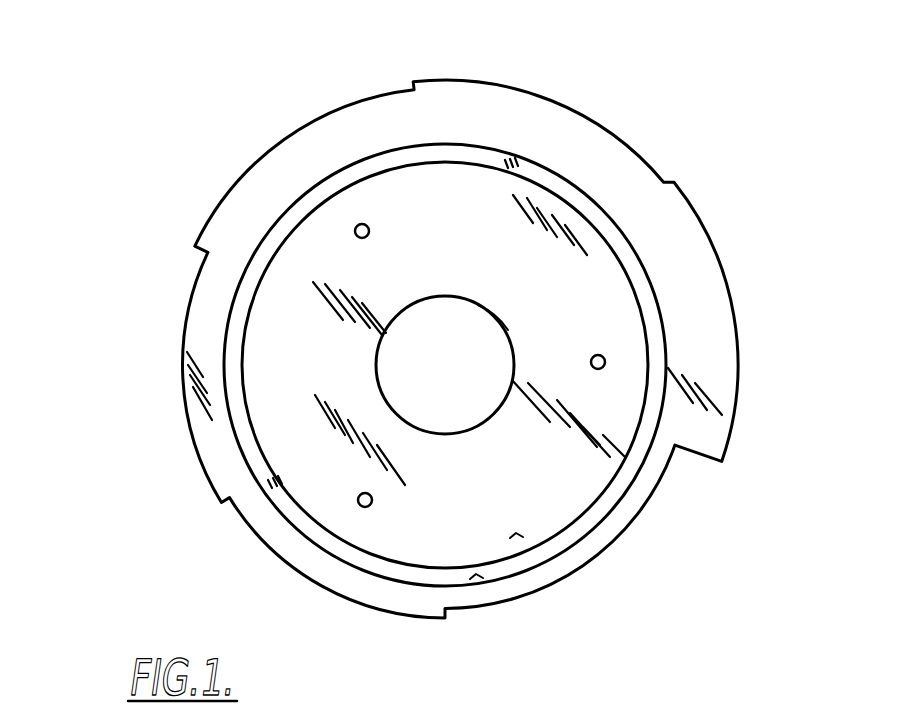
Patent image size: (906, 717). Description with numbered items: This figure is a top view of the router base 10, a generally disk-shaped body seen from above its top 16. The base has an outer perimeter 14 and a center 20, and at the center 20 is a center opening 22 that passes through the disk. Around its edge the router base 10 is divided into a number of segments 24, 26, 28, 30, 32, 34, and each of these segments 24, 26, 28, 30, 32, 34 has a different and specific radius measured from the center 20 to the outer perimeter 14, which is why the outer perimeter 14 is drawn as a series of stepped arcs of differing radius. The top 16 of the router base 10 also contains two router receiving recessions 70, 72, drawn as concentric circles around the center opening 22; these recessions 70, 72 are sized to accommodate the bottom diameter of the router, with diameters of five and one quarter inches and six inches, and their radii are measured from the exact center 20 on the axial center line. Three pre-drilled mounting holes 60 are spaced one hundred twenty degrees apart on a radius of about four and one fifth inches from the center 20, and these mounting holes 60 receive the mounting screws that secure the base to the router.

The router base 10 is at (196, 177).
The outer perimeter 14 is at (357, 100).
The top 16 is at (558, 465).
The center 20 is at (470, 345).
The center opening 22 is at (478, 305).
The segment 24 is at (575, 574).
The segment 26 is at (268, 587).
The segment 28 is at (153, 375).
The segment 30 is at (280, 149).
The segment 32 is at (560, 99).
The segment 34 is at (745, 320).
The mounting holes 60 is at (356, 235).
The router receiving recession 70 is at (517, 535).
The router receiving recession 72 is at (478, 575).